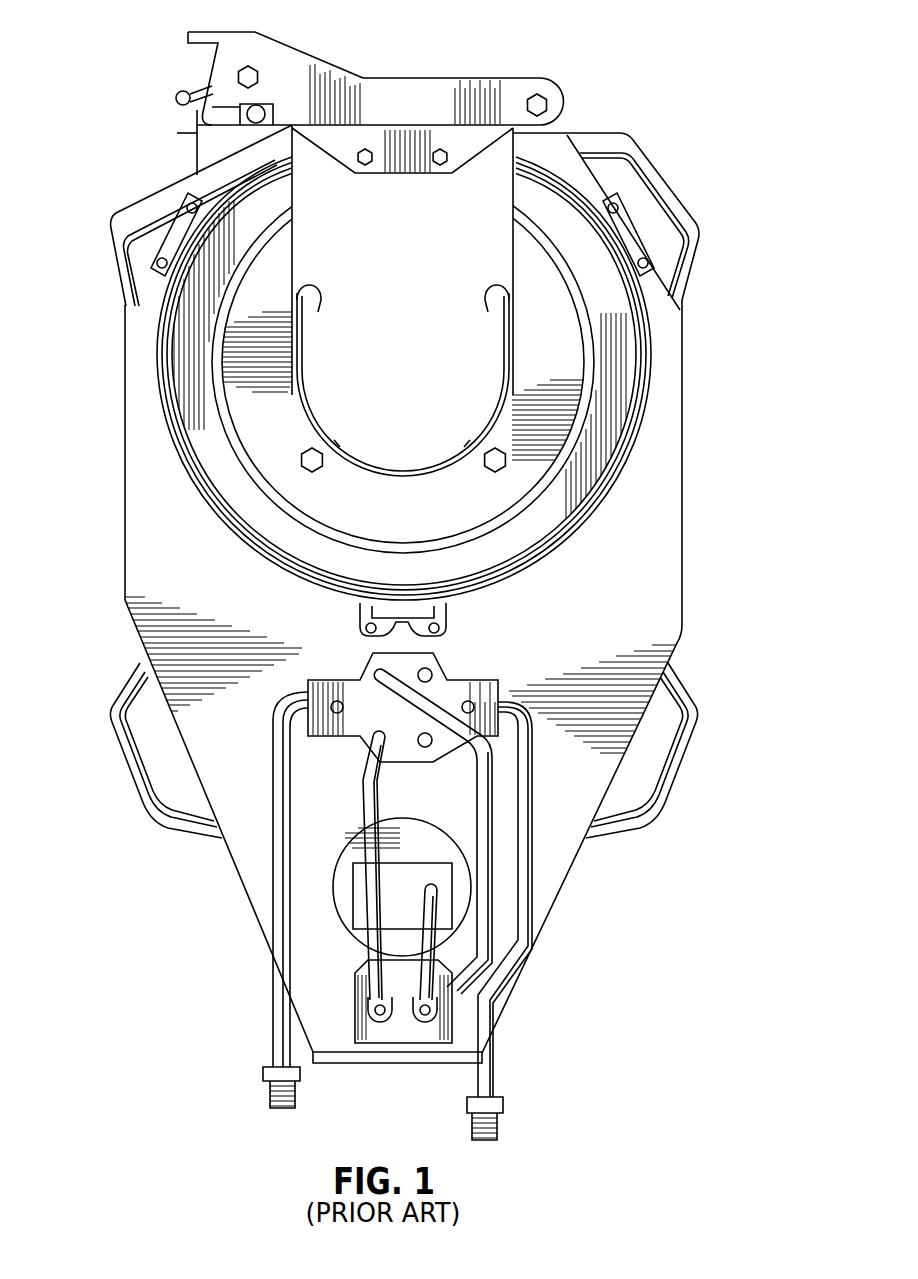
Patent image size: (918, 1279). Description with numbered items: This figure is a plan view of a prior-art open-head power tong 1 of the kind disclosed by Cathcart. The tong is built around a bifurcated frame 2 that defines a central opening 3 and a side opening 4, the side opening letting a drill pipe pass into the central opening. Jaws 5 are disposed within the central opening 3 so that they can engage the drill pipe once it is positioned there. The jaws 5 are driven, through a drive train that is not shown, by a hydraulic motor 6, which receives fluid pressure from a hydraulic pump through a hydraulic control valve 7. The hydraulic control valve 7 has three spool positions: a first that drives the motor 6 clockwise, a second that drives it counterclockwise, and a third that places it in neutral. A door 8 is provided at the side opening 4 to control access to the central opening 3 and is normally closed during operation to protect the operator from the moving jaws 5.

The open-head power tong 1 is at (402, 575).
The bifurcated frame 2 is at (126, 456).
The central opening 3 is at (370, 393).
The side opening 4 is at (458, 243).
The jaws 5 is at (316, 313).
The hydraulic motor 6 is at (407, 822).
The hydraulic control valve 7 is at (458, 682).
The door 8 is at (415, 80).